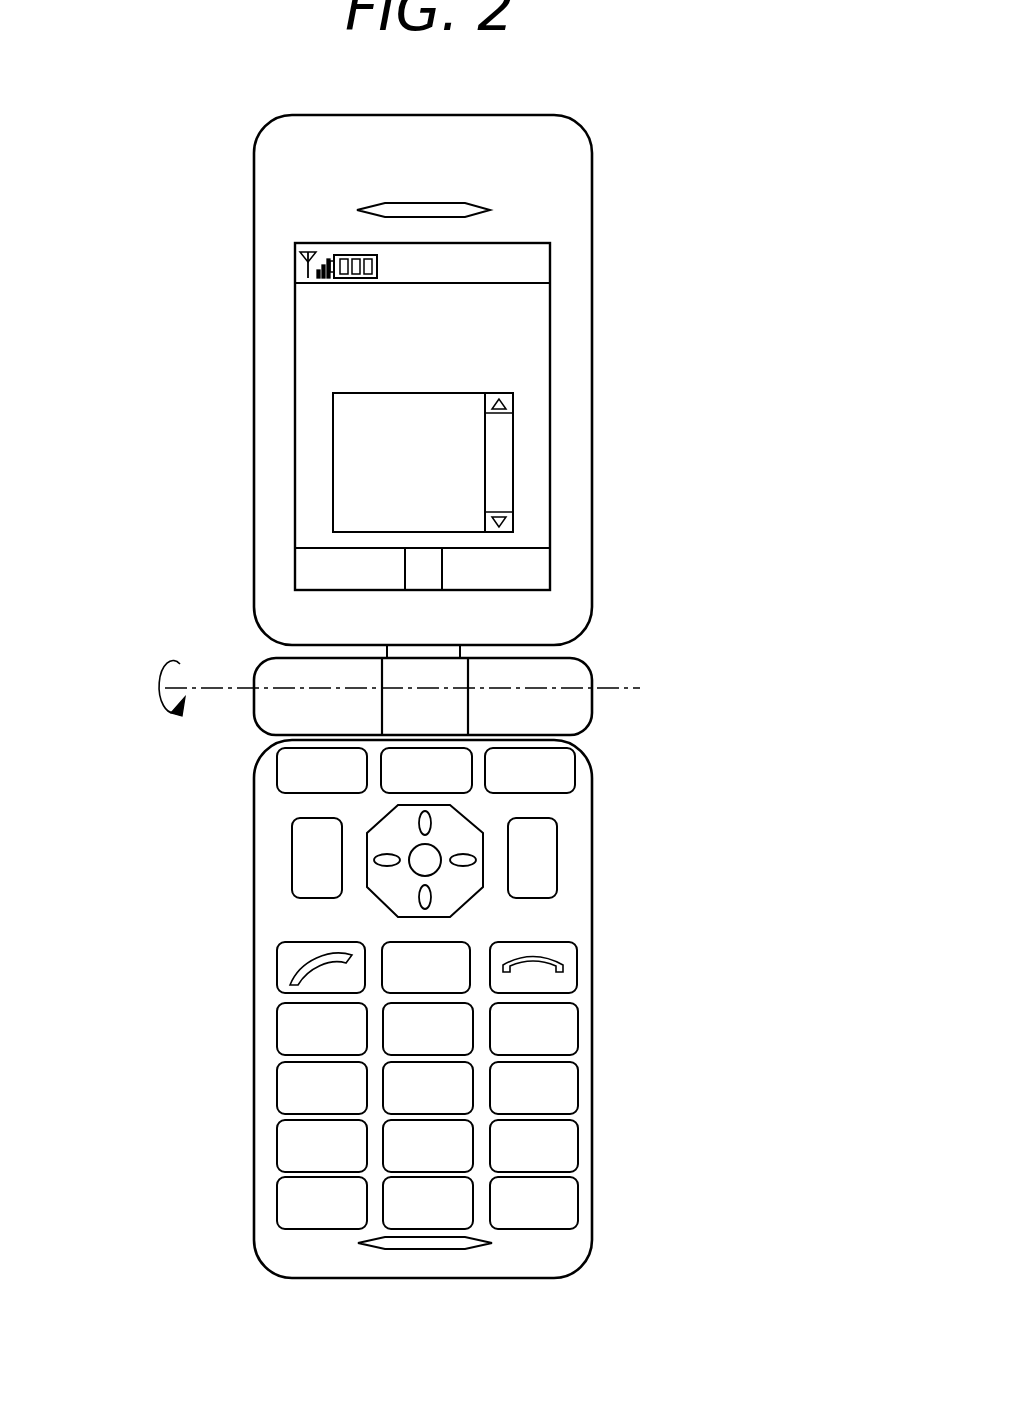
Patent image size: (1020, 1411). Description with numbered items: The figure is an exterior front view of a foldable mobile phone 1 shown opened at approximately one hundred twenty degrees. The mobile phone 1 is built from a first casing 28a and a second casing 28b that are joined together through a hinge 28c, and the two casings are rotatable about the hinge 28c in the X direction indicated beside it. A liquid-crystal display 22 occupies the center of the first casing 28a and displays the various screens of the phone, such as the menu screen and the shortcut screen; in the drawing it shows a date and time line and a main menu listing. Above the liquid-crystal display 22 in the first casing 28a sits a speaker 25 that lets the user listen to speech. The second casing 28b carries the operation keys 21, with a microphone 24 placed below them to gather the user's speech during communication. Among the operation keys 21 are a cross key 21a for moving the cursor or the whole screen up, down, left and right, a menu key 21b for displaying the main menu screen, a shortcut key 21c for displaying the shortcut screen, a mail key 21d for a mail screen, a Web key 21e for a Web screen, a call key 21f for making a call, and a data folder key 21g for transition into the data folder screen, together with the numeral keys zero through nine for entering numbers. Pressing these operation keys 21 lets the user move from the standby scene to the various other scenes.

The mobile phone 1 is at (626, 1101).
The operation keys 21 is at (218, 1157).
The cross key 21a is at (445, 868).
The menu key 21b is at (307, 748).
The shortcut key 21c is at (575, 766).
The mail key 21d is at (342, 843).
The Web key 21e is at (557, 842).
The call key 21f is at (345, 940).
The data folder key 21g is at (440, 746).
The liquid-crystal display 22 is at (550, 300).
The microphone 24 is at (450, 1250).
The speaker 25 is at (467, 205).
The first casing 28a is at (591, 389).
The second casing 28b is at (594, 971).
The hinge 28c is at (590, 665).